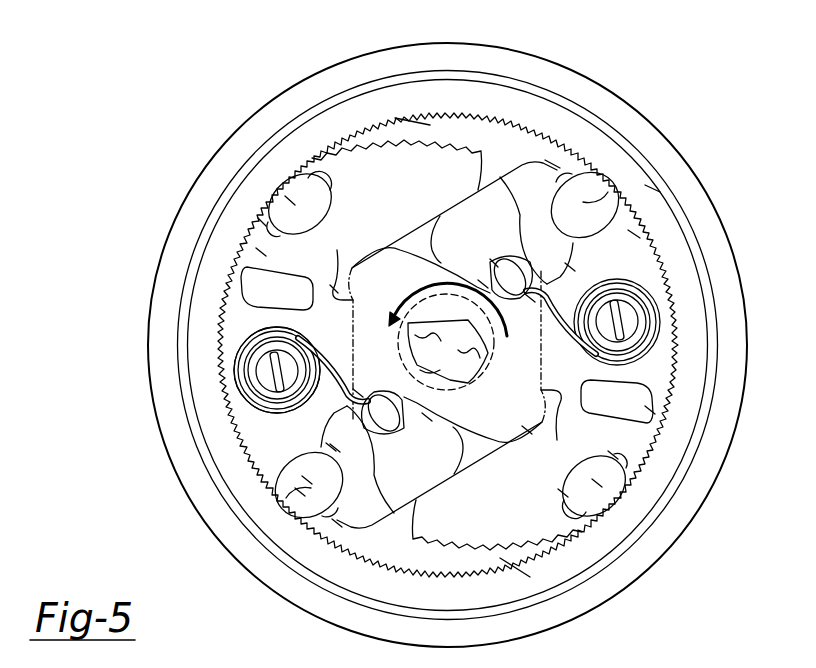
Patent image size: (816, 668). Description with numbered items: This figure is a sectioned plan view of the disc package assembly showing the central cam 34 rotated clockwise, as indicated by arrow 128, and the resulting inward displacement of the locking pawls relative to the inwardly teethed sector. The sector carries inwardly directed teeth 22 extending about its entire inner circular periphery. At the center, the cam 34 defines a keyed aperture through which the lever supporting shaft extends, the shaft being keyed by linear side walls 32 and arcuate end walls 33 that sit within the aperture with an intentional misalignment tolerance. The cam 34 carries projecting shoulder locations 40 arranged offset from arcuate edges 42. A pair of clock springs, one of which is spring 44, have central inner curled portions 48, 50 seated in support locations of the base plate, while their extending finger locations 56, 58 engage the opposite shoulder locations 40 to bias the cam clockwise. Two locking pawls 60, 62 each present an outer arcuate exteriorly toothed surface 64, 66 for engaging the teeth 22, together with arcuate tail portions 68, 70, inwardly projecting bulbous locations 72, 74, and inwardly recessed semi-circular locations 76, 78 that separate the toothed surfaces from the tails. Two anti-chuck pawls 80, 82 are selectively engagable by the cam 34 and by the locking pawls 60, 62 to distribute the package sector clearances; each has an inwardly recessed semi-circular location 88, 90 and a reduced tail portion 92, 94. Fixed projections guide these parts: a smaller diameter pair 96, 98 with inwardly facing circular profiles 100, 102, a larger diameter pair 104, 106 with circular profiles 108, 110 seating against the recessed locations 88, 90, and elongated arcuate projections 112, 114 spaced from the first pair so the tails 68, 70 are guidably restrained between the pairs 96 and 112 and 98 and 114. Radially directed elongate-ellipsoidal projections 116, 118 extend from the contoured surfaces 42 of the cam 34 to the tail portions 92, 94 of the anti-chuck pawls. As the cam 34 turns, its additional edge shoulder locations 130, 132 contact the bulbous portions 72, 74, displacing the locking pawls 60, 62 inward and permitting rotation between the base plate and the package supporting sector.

The inwardly directed teeth 22 is at (470, 116).
The linear side walls 32 is at (477, 380).
The arcuate end walls 33 is at (448, 351).
The cam 34 is at (381, 301).
The projecting shoulder locations 40 is at (358, 393).
The arcuate edges 42 is at (483, 283).
The clock spring 44 is at (660, 289).
The central inner curled portion 48 is at (270, 378).
The central inner curled portion 50 is at (247, 393).
The extending finger location 56 is at (540, 287).
The extending finger location 58 is at (309, 485).
The locking pawl 60 is at (381, 186).
The locking pawl 62 is at (481, 534).
The exteriorly toothed surface 64 is at (428, 122).
The exteriorly toothed surface 66 is at (525, 576).
The arcuate tail portion 68 is at (262, 253).
The arcuate tail portion 70 is at (613, 455).
The inwardly projecting bulbous location 72 is at (333, 290).
The inwardly projecting bulbous location 74 is at (557, 398).
The inwardly recessed semi-circular location 76 is at (305, 178).
The inwardly recessed semi-circular location 78 is at (590, 515).
The anti-chuck pawl 80 is at (553, 163).
The anti-chuck pawl 82 is at (337, 523).
The inwardly recessed semi-circular location 88 is at (587, 200).
The inwardly recessed semi-circular location 90 is at (307, 480).
The tail portion 92 is at (570, 267).
The tail portion 94 is at (330, 447).
The first smaller diameter projection 96 is at (293, 200).
The first smaller diameter projection 98 is at (597, 483).
The inwardly facing circular profile 100 is at (262, 222).
The inwardly facing circular profile 102 is at (563, 493).
The larger diameter projection 104 is at (655, 185).
The larger diameter projection 106 is at (300, 492).
The inwardly facing circular profile 108 is at (635, 235).
The inwardly facing circular profile 110 is at (335, 448).
The elongated arcuate projection 112 is at (243, 288).
The elongated arcuate projection 114 is at (650, 410).
The radially directed elongate-ellipsoidal projection 116 is at (493, 263).
The radially directed elongate-ellipsoidal projection 118 is at (375, 423).
The arrow 128 is at (427, 290).
The edge shoulder location 130 is at (380, 267).
The edge shoulder location 132 is at (527, 430).